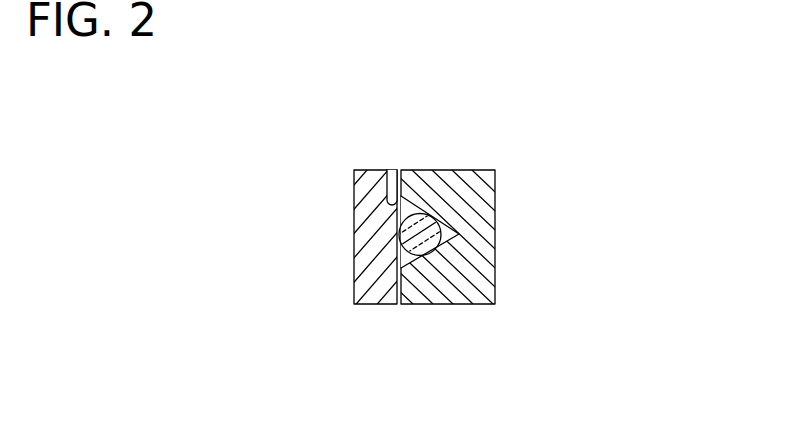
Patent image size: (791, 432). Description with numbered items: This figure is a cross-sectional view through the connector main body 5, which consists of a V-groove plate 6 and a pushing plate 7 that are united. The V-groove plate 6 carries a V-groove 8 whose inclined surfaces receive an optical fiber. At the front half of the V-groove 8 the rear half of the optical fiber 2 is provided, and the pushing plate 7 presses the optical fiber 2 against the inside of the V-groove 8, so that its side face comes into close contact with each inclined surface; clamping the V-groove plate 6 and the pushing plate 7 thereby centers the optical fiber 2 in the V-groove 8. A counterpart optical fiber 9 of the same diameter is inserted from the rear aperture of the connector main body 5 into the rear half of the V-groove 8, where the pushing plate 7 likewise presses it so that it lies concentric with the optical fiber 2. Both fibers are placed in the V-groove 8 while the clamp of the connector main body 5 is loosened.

The optical fiber 2 is at (444, 176).
The optical fiber 9 is at (422, 231).
The connector main body 5 is at (447, 216).
The V-groove plate 6 is at (447, 293).
The pushing plate 7 is at (375, 293).
The V-groove 8 is at (392, 206).